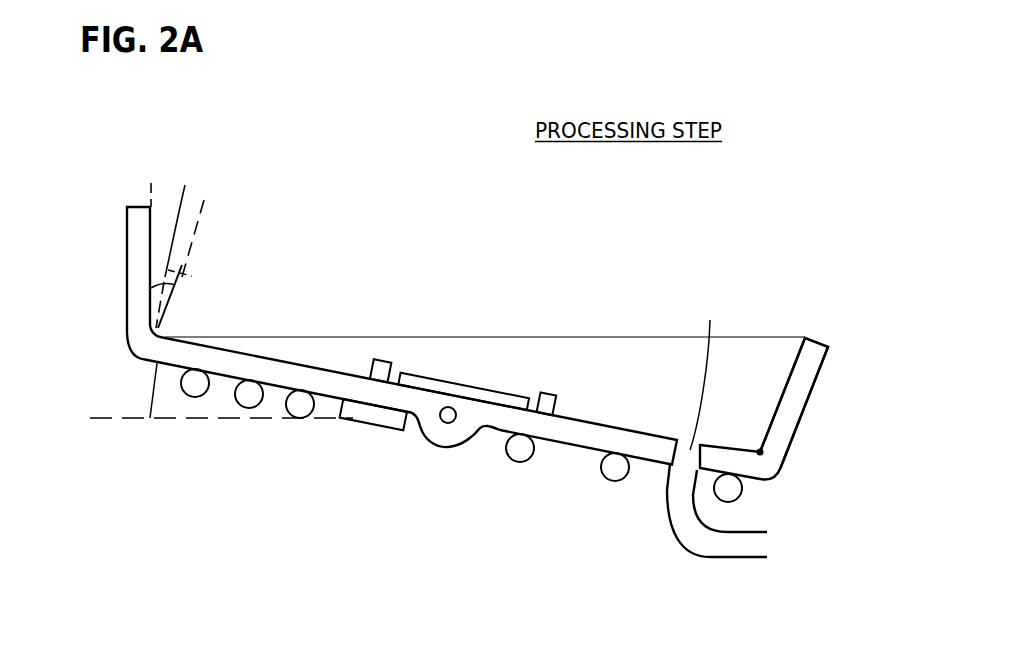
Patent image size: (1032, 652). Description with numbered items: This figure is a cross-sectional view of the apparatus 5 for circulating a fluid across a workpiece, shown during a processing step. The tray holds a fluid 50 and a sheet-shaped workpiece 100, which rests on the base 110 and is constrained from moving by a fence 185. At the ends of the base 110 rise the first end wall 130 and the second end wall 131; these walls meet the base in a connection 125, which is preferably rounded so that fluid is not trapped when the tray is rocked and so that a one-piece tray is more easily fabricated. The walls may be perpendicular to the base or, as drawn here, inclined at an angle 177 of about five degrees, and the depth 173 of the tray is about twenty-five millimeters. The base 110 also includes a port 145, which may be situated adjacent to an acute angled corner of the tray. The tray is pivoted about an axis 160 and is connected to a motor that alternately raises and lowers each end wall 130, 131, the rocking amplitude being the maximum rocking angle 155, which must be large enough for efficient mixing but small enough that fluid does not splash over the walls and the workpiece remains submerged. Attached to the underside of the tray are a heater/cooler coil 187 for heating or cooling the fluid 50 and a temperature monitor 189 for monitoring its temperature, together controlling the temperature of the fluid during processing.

The apparatus 5 is at (787, 230).
The fluid 50 is at (755, 338).
The workpiece 100 is at (428, 375).
The base 110 is at (580, 428).
The connection 125 is at (131, 339).
The first end wall 130 is at (127, 265).
The second end wall 131 is at (796, 393).
The port 145 is at (701, 368).
The maximum rocking angle 155 is at (152, 394).
The axis 160 is at (449, 424).
The depth 173 is at (195, 282).
The angle 177 is at (178, 240).
The fence 185 is at (547, 392).
The heater/cooler coil 187 is at (292, 418).
The temperature monitor 189 is at (357, 422).